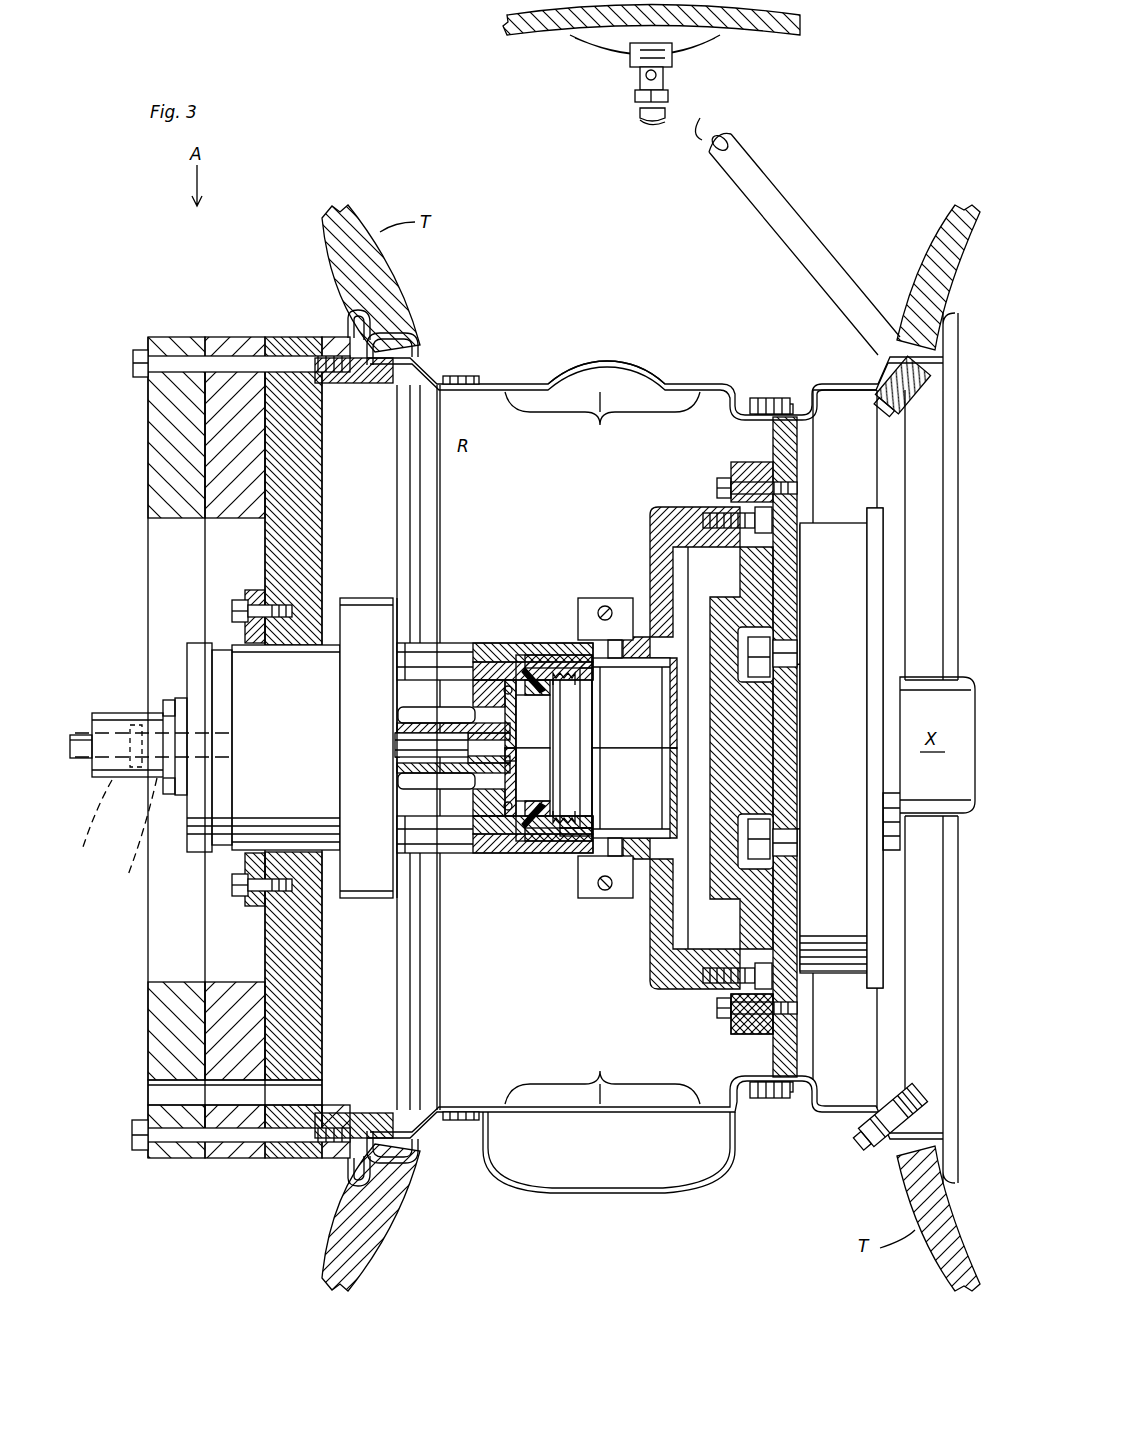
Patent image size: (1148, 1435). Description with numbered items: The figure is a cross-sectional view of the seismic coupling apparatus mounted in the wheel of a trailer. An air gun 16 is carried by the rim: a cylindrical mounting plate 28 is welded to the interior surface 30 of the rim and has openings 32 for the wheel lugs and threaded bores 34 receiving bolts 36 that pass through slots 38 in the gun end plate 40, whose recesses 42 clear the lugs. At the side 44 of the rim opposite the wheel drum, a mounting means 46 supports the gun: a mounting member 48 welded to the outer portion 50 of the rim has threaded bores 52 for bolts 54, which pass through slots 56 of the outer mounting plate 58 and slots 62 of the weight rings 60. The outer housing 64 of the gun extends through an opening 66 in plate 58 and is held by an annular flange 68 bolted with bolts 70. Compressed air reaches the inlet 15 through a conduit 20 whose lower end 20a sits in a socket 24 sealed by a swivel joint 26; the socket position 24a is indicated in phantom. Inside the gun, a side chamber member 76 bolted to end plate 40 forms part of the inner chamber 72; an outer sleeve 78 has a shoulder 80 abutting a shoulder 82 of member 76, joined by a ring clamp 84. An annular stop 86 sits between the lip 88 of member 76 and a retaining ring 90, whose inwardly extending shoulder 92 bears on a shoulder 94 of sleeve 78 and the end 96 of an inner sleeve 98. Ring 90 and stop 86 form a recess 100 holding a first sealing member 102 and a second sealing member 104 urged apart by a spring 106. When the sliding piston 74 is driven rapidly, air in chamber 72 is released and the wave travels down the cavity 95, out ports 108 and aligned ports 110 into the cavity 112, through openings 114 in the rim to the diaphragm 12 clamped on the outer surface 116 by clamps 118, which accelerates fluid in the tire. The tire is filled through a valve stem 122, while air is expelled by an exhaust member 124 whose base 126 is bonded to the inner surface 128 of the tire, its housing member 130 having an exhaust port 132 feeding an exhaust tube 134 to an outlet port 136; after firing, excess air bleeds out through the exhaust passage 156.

The diaphragm 12 is at (605, 1193).
The inlet 15 is at (300, 733).
The air gun 16 is at (557, 578).
The conduit 20 is at (80, 735).
The lower end of conduit 20a is at (123, 835).
The socket 24 is at (122, 778).
The coupling position 24a is at (90, 817).
The swivel joint 26 is at (138, 725).
The cylindrical mounting plate 28 is at (800, 440).
The interior surface of rim 30 is at (750, 1078).
The openings 32 is at (790, 800).
The threaded bores 34 is at (797, 1008).
The bolts 36 is at (718, 1012).
The slots 38 is at (740, 1035).
The gun end plate 40 is at (800, 722).
The recesses 42 is at (775, 855).
The side of rim 44 is at (350, 1175).
The mounting means 46 is at (236, 580).
The mounting member 48 is at (340, 1110).
The outer portion of rim 50 is at (415, 1175).
The threaded bores 52 is at (333, 340).
The bolts 54 is at (138, 1120).
The slots 56 is at (285, 1160).
The outer mounting plate 58 is at (308, 462).
The weight rings 60 is at (237, 980).
The slots 62 is at (192, 1160).
The outer housing 64 is at (300, 694).
The opening 66 is at (300, 860).
The annular flange 68 is at (240, 625).
The bolts 70 is at (232, 885).
The inner chamber 72 is at (655, 746).
The sliding piston 74 is at (498, 723).
The side chamber member 76 is at (655, 515).
The outer sleeve 78 is at (500, 645).
The shoulder 80 is at (592, 600).
The shoulder 82 is at (615, 658).
The ring clamp 84 is at (612, 598).
The annular stop 86 is at (593, 790).
The lip 88 is at (595, 826).
The retaining ring 90 is at (558, 838).
The inwardly extending shoulder 92 is at (530, 830).
The shoulder 94 is at (525, 845).
The cavity 95 is at (445, 804).
The end of inner sleeve 96 is at (500, 840).
The inner sleeve 98 is at (498, 815).
The recess 100 is at (560, 655).
The first sealing member 102 is at (575, 712).
The second sealing member 104 is at (540, 690).
The spring 106 is at (565, 770).
The ports 108 is at (410, 795).
The second set of ports 110 is at (400, 830).
The cavity 112 is at (540, 967).
The openings 114 is at (602, 748).
The outer surface of rim 116 is at (610, 1112).
The clamps 118 is at (775, 404).
The valve stem 122 is at (895, 1085).
The exhaust member 124 is at (694, 81).
The base 126 is at (590, 48).
The inner surface of tire 128 is at (520, 35).
The housing member 130 is at (670, 97).
The exhaust port 132 is at (640, 80).
The exhaust tube 134 is at (760, 170).
The outlet port 136 is at (912, 412).
The exhaust passage 156 is at (312, 1093).